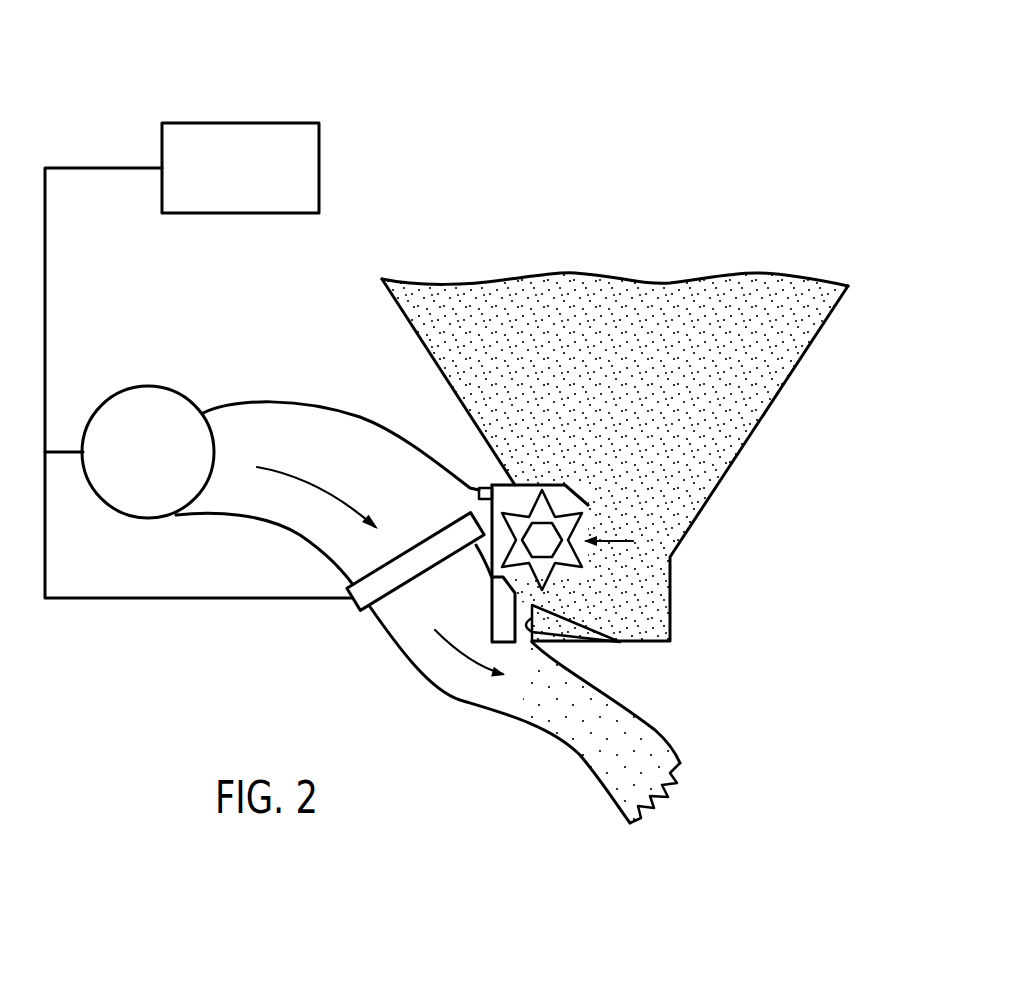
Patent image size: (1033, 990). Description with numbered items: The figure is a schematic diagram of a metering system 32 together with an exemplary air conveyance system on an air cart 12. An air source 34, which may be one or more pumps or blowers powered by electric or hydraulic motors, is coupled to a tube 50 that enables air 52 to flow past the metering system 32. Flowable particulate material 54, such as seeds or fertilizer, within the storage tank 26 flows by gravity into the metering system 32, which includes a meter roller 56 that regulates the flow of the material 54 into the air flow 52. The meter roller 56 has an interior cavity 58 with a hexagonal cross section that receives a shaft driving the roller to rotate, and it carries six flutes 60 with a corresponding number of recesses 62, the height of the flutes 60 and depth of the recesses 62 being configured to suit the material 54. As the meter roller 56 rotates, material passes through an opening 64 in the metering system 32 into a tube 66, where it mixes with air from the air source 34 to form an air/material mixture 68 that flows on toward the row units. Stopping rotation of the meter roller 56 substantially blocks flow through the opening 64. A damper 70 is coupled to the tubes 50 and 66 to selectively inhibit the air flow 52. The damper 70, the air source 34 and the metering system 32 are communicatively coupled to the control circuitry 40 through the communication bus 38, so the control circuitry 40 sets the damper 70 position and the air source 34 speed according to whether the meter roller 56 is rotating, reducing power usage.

The air cart 12 is at (273, 66).
The storage tank 26 is at (405, 314).
The metering system 32 is at (478, 483).
The air source 34 is at (148, 386).
The communication bus 38 is at (155, 599).
The control circuitry 40 is at (320, 168).
The tube 50 is at (260, 522).
The air flow 52 is at (318, 484).
The flowable particulate material 54 is at (776, 378).
The meter roller 56 is at (633, 541).
The interior cavity 58 is at (532, 548).
The flutes 60 is at (532, 548).
The recesses 62 is at (564, 485).
The opening 64 is at (592, 641).
The tube 66 is at (450, 697).
The air/material mixture 68 is at (583, 738).
The damper 70 is at (356, 608).